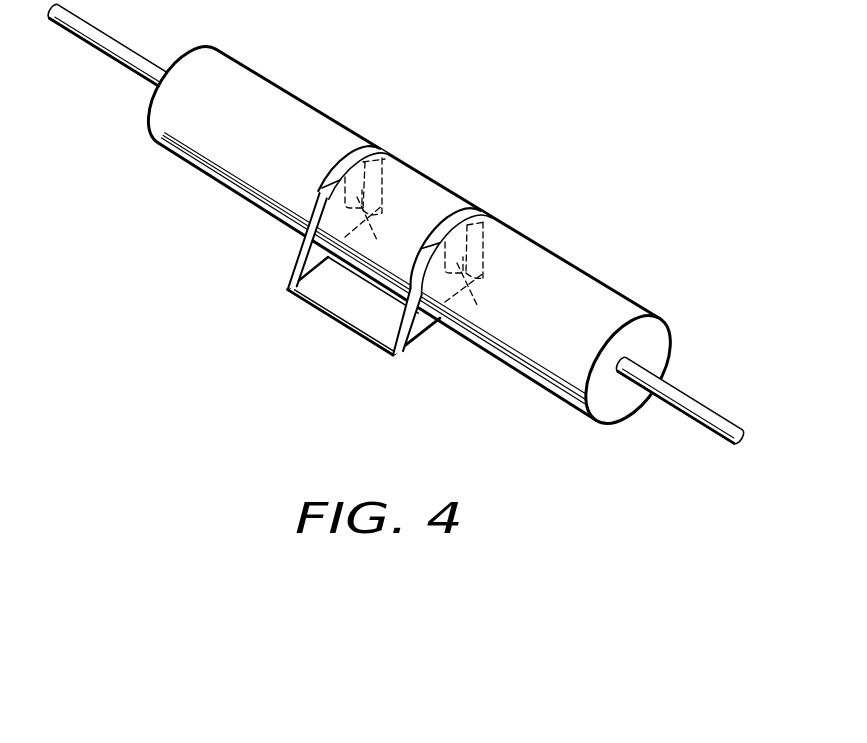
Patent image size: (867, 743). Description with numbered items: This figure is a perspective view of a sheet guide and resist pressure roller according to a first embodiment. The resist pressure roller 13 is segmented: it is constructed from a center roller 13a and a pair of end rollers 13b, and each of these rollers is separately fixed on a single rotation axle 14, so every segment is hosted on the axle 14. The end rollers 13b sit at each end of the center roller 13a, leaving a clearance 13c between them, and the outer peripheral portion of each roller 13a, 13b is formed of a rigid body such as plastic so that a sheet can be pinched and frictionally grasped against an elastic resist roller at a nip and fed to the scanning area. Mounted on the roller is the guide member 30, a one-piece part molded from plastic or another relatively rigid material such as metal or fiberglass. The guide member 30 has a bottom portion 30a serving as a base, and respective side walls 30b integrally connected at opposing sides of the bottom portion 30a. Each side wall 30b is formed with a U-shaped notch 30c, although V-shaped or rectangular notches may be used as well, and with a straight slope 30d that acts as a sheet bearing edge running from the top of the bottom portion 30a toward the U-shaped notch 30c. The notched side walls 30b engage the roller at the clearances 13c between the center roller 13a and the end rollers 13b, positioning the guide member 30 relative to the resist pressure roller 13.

The resist pressure roller 13 is at (623, 295).
The center roller 13a is at (427, 187).
The end roller 13b is at (227, 72).
The clearance 13c is at (348, 155).
The rotation axle 14 is at (708, 419).
The guide member 30 is at (388, 263).
The bottom portion 30a is at (320, 293).
The side wall 30b is at (391, 151).
The U-shaped notch 30c is at (431, 260).
The straight slope 30d is at (300, 262).